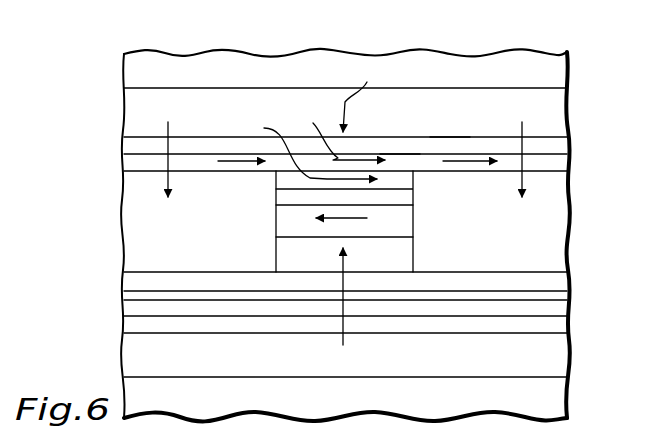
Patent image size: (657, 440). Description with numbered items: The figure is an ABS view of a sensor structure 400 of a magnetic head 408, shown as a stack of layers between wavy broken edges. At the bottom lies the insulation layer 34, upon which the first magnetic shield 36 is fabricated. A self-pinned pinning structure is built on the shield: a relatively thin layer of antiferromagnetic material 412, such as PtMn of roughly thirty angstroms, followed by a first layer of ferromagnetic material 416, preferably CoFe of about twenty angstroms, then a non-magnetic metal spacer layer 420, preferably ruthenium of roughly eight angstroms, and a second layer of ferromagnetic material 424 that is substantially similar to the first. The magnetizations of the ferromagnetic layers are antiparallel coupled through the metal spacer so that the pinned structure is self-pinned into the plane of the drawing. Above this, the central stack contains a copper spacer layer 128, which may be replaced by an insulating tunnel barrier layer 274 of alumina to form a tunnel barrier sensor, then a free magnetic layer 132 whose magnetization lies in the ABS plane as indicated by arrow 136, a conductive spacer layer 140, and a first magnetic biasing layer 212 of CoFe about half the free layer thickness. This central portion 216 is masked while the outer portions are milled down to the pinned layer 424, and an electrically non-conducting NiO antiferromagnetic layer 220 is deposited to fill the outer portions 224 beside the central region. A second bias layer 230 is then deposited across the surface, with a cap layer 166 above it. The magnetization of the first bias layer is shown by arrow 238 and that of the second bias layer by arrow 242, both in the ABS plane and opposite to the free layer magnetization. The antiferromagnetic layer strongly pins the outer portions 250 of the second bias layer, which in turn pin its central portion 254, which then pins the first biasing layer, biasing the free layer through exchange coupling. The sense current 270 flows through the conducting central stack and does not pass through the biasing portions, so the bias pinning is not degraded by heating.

The sensor structure 400 is at (172, 46).
The magnetic head 408 is at (283, 50).
The central portion 216 is at (343, 93).
The outer portions of the second bias layer 250 is at (132, 160).
The second bias layer 230 is at (568, 160).
The outer portions of the sensor 224 is at (344, 143).
The arrow indicating magnetization of the first bias layer 238 is at (295, 140).
The arrow indicating magnetization of the second bias layer 242 is at (332, 127).
The central portion of the second bias layer 254 is at (396, 157).
The cap layer 166 is at (449, 148).
The antiferromagnetic layer 220 is at (128, 218).
The first magnetic biasing layer 212 is at (404, 180).
The free magnetic layer 132 is at (400, 218).
The spacer layer 128 is at (397, 253).
The spacer layer 140 is at (287, 195).
The arrow indicating magnetization of the free magnetic layer 136 is at (332, 215).
The tunnel barrier layer 274 is at (295, 250).
The sense current 270 is at (343, 343).
The second layer of ferromagnetic material 424 is at (560, 278).
The non-magnetic metal spacer layer 420 is at (562, 297).
The first layer of ferromagnetic material 416 is at (562, 303).
The antiferromagnetic material layer 412 is at (562, 328).
The first magnetic shield 36 is at (552, 358).
The insulation layer 34 is at (551, 396).